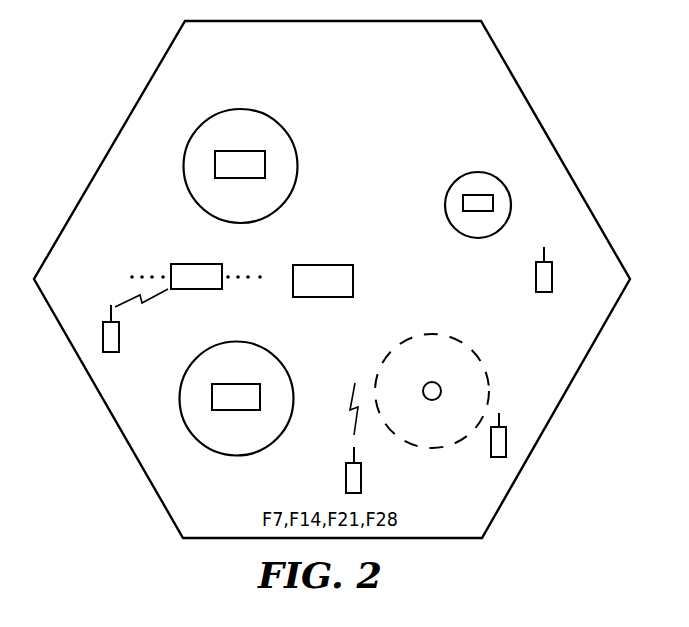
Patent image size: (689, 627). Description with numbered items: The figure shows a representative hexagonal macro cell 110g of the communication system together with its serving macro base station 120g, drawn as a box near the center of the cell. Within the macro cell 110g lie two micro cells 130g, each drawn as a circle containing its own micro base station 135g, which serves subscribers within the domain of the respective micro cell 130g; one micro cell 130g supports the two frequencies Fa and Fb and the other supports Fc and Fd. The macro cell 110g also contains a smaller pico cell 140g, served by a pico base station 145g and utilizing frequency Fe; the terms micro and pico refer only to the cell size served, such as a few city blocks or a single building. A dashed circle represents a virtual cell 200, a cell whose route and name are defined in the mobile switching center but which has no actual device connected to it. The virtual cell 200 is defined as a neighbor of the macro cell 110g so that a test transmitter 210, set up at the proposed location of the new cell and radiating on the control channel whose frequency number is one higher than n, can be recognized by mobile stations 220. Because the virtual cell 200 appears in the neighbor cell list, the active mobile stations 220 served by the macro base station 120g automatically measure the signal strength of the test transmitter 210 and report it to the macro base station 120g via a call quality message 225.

The macro cell 110g is at (332, 279).
The macro base station 120g is at (353, 277).
The micro cell 130g is at (218, 110).
The micro base station 135g is at (215, 169).
The pico cell 140g is at (472, 174).
The pico base station 145g is at (463, 206).
The virtual cell 200 is at (457, 338).
The test transmitter 210 is at (441, 384).
The mobile station 220 is at (111, 316).
The call quality message 225 is at (205, 289).